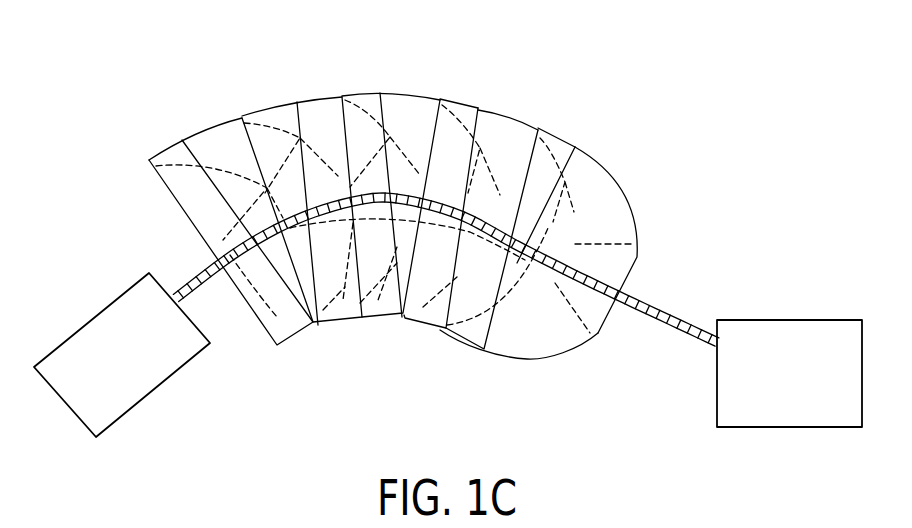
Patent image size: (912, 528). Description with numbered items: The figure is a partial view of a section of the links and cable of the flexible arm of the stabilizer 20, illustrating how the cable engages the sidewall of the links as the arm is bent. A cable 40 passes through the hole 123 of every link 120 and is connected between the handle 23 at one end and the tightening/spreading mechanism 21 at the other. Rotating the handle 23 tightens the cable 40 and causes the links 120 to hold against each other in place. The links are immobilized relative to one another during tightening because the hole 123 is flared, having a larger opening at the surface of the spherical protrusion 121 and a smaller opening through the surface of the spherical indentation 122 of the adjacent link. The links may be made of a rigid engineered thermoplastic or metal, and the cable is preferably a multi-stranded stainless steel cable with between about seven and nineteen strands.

The articulating device 20 is at (265, 78).
The articulating segments (vertebrae) 120 is at (500, 128).
The spherical protrusion 121 is at (562, 355).
The spherical indentation 122 is at (165, 184).
The hole 123 is at (637, 258).
The cable 40 is at (662, 309).
The tightening/spreading mechanism 21 is at (775, 320).
The handle 23 is at (143, 402).